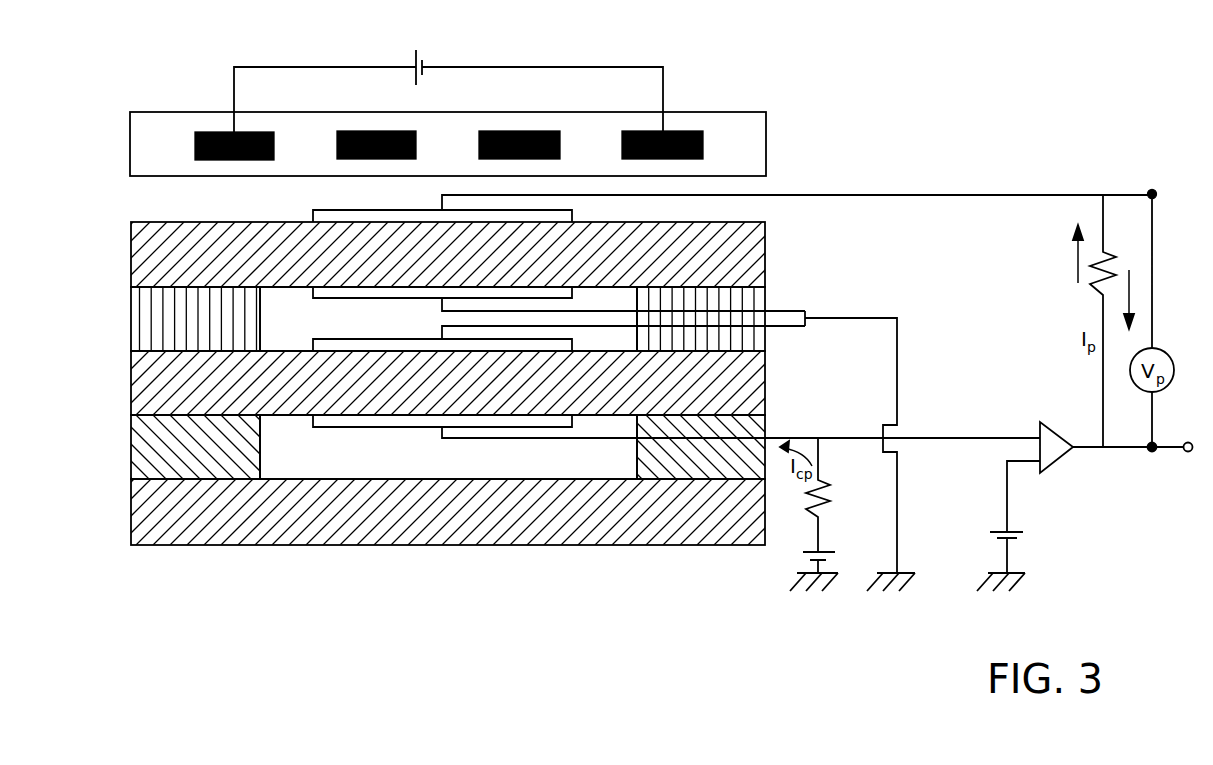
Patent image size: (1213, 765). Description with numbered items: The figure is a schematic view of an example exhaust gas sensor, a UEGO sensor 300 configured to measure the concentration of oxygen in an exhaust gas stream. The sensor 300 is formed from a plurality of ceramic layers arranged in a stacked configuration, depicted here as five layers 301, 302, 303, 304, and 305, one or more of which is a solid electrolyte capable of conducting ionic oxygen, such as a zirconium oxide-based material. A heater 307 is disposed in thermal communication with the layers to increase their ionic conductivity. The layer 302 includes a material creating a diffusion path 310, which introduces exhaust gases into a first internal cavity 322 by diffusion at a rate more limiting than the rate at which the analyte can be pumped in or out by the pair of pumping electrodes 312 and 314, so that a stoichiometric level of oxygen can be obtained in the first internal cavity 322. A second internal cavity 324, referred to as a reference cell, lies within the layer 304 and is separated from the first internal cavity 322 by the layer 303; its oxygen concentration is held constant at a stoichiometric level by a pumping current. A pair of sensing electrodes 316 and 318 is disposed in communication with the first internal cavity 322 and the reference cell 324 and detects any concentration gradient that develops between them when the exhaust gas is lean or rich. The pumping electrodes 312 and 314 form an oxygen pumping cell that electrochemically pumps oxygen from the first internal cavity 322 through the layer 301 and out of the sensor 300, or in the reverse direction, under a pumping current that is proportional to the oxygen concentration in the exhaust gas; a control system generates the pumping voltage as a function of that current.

The UEGO sensor 300 is at (756, 58).
The ceramic layer 301 is at (131, 235).
The ceramic layer 302 is at (131, 300).
The ceramic layer 303 is at (131, 401).
The ceramic layer 304 is at (131, 467).
The ceramic layer 305 is at (131, 533).
The heater 307 is at (197, 141).
The diffusion path 310 is at (162, 333).
The pumping electrode 312 is at (313, 211).
The pumping electrode 314 is at (313, 296).
The sensing electrode 316 is at (313, 339).
The sensing electrode 318 is at (313, 426).
The first internal cavity 322 is at (375, 330).
The second internal cavity 324 is at (375, 461).